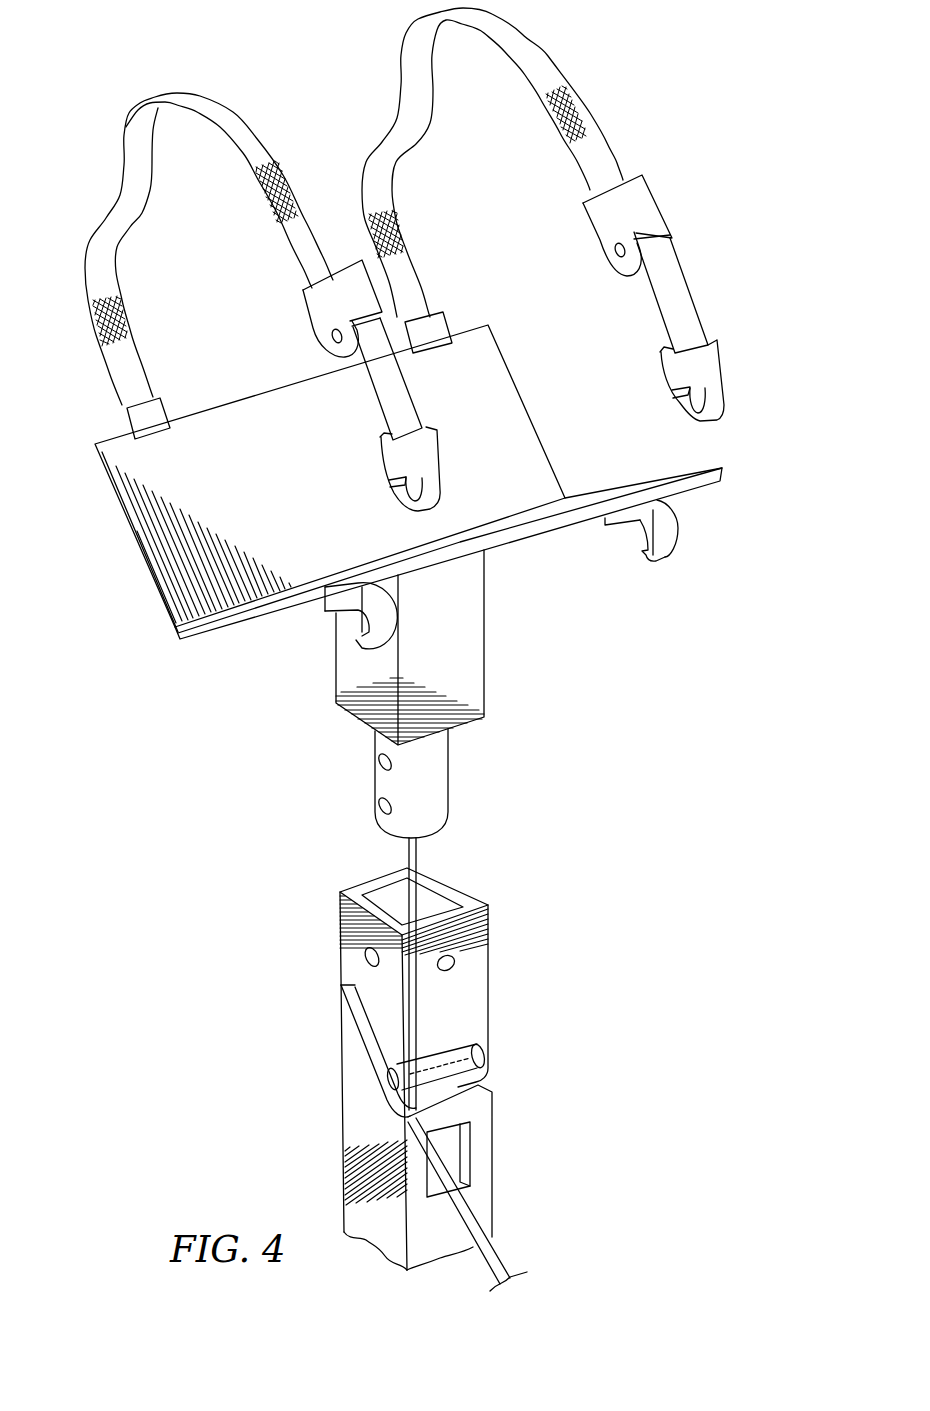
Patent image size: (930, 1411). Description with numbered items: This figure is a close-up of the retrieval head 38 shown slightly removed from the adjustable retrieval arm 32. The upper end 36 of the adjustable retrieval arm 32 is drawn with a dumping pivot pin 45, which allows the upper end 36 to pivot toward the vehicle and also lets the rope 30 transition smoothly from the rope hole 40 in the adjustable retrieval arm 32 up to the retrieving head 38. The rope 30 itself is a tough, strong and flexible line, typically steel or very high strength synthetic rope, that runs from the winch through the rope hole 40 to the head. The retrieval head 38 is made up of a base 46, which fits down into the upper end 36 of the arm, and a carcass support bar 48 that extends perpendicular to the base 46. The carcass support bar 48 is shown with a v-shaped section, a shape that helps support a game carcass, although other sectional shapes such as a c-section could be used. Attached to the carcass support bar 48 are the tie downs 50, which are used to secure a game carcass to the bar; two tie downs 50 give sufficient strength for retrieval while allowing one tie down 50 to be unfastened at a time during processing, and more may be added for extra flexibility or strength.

The rope 30 is at (471, 1205).
The adjustable retrieval arm 32 is at (352, 1128).
The upper end 36 is at (482, 970).
The retrieval head 38 is at (383, 412).
The rope hole 40 is at (448, 1152).
The dumping pivot pin 45 is at (445, 1052).
The base 46 is at (474, 650).
The carcass support bar 48 is at (515, 405).
The tie downs 50 is at (260, 152).